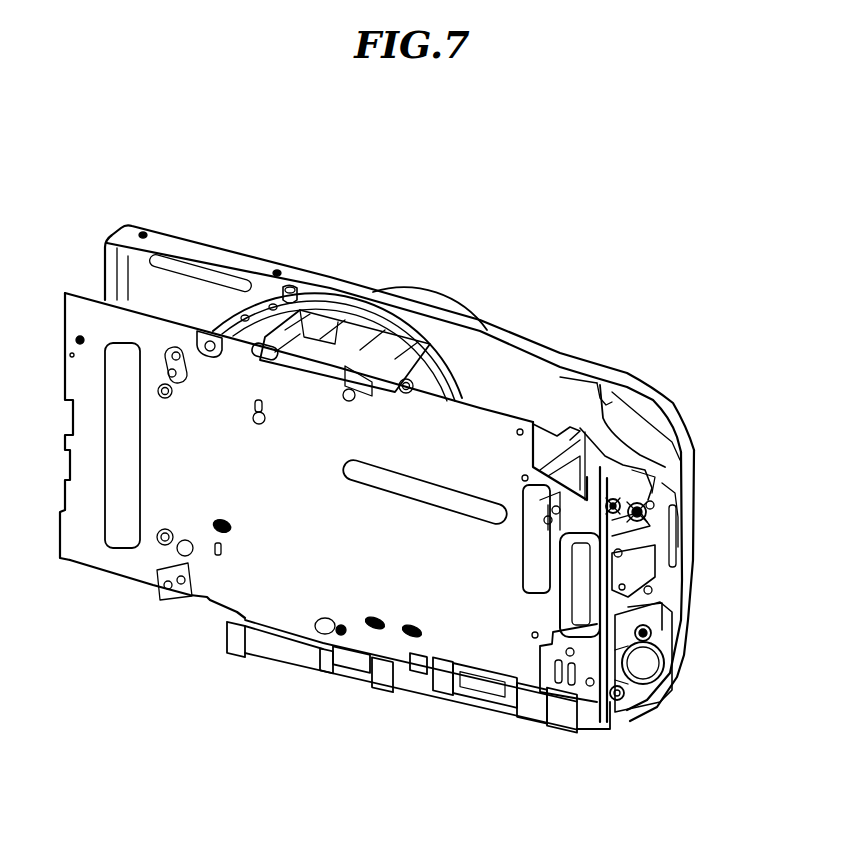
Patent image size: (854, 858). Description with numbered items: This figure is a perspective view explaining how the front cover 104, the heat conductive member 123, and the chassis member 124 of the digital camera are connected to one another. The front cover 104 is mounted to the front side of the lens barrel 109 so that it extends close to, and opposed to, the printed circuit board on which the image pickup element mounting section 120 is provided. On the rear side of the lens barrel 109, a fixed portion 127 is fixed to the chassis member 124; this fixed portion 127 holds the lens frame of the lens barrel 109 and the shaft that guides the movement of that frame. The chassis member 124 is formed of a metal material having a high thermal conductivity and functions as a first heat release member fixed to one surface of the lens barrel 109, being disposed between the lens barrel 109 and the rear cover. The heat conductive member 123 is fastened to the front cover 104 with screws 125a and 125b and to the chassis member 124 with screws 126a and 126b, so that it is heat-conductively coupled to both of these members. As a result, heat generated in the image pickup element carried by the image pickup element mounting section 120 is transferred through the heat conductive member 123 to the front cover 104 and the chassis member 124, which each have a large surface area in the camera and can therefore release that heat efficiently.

The front cover 104 is at (513, 334).
The lens barrel 109 is at (344, 343).
The image pickup element mounting section 120 is at (633, 570).
The heat conductive member 123 is at (692, 492).
The chassis member 124 is at (277, 593).
The screw 125a is at (650, 502).
The screw 125b is at (645, 636).
The screw 126a is at (614, 503).
The screw 126b is at (618, 695).
The fixed portion 127 is at (272, 343).